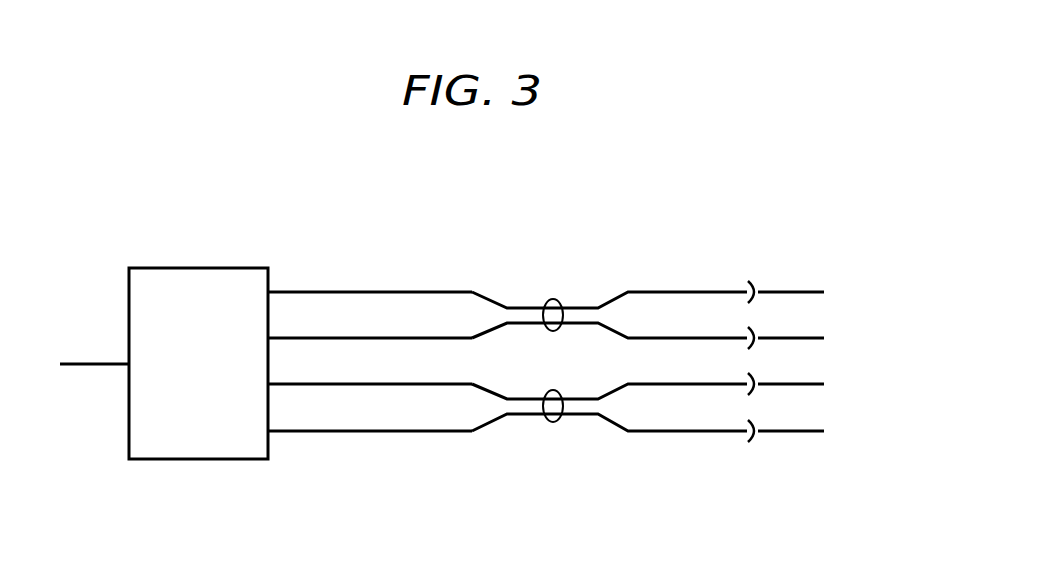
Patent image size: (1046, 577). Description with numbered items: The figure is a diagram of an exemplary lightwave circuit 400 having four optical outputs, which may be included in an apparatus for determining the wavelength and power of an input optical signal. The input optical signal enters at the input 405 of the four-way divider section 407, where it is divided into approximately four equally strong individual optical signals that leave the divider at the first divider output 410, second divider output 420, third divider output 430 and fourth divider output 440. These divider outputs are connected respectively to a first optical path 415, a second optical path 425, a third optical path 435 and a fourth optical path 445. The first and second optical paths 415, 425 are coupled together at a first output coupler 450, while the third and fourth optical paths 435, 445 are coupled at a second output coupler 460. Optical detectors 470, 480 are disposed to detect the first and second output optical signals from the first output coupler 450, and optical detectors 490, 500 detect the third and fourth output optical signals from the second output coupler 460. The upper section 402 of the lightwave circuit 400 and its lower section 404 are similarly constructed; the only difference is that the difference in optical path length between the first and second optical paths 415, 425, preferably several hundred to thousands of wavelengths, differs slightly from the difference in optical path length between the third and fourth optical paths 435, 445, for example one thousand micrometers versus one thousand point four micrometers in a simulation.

The lightwave circuit 400 is at (498, 196).
The upper section 402 is at (553, 259).
The lower section 404 is at (553, 445).
The input 405 is at (97, 360).
The four-way divider section 407 is at (201, 268).
The first divider output 410 is at (282, 292).
The first optical path 415 is at (432, 290).
The second divider output 420 is at (282, 338).
The second optical path 425 is at (432, 336).
The third divider output 430 is at (282, 384).
The third optical path 435 is at (432, 382).
The fourth divider output 440 is at (282, 431).
The fourth optical path 445 is at (432, 429).
The first output coupler 450 is at (555, 298).
The second output coupler 460 is at (555, 390).
The optical detector 470 is at (765, 285).
The optical detector 480 is at (765, 331).
The optical detector 490 is at (765, 377).
The optical detector 500 is at (765, 424).